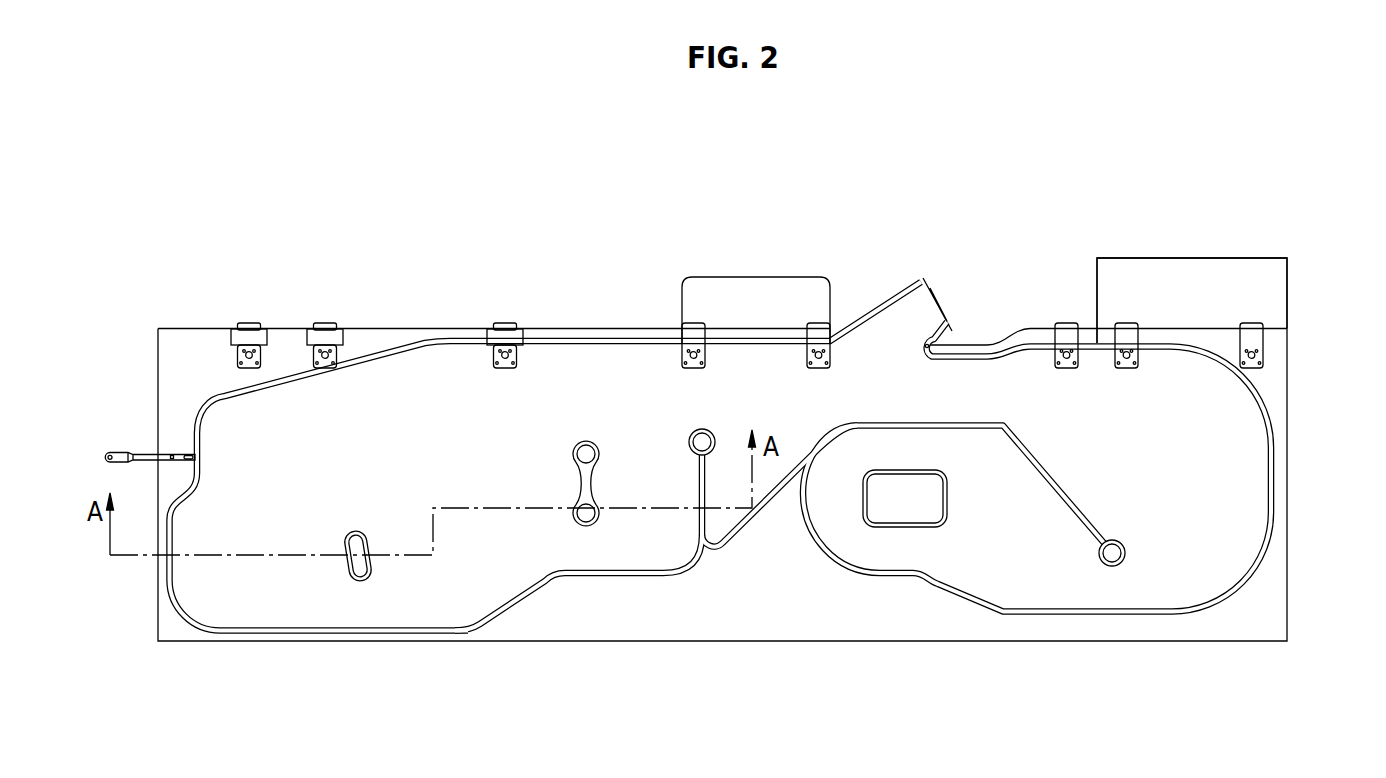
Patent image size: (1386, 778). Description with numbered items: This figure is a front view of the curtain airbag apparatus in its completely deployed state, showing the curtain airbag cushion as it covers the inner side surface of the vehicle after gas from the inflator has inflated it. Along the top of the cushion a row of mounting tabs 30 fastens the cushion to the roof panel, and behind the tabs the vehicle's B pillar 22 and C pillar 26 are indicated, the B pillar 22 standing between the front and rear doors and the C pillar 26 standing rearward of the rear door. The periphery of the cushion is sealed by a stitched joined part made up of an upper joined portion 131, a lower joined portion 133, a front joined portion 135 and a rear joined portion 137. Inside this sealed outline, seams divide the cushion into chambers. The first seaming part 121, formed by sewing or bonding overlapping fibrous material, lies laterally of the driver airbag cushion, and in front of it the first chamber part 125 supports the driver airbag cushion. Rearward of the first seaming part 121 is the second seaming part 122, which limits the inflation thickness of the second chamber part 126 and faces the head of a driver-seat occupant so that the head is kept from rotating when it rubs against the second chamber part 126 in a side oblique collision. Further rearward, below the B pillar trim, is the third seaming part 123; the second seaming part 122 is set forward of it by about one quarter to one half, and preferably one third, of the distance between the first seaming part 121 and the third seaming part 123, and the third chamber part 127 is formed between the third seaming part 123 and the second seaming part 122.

The B pillar 22 is at (755, 287).
The C pillar 26 is at (1210, 282).
The mounting tab 30 is at (508, 353).
The first seaming part 121 is at (357, 567).
The second seaming part 122 is at (577, 490).
The third seaming part 123 is at (700, 487).
The first chamber part 125 is at (240, 585).
The second chamber part 126 is at (467, 558).
The third chamber part 127 is at (648, 470).
The upper joined portion 131 is at (382, 347).
The lower joined portion 133 is at (392, 633).
The front joined portion 135 is at (172, 570).
The rear joined portion 137 is at (1273, 462).